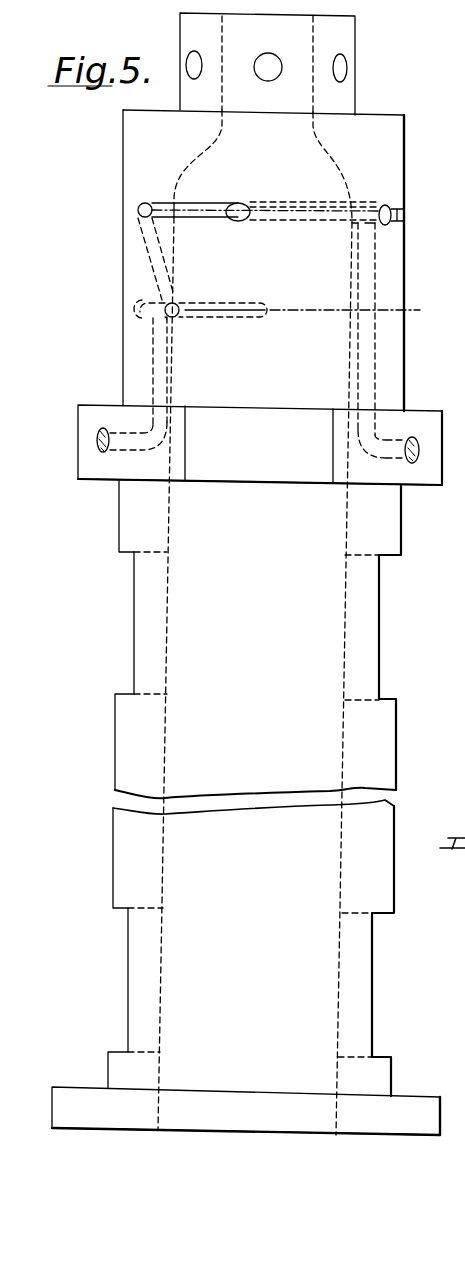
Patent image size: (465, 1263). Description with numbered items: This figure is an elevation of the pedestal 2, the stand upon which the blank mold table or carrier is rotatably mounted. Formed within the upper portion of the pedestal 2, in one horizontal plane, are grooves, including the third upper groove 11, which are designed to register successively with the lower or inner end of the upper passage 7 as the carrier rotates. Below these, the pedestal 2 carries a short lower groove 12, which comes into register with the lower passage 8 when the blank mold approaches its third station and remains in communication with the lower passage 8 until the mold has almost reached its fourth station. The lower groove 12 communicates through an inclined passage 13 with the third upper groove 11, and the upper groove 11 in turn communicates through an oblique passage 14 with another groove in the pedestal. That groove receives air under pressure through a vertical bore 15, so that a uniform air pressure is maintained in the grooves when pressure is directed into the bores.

The pedestal 2 is at (370, 893).
The upper passage 7 is at (140, 208).
The lower passage 8 is at (160, 308).
The third upper groove 11 is at (194, 208).
The short lower groove 12 is at (233, 316).
The inclined passage 13 is at (170, 256).
The oblique passage 14 is at (243, 207).
The vertical bore 15 is at (376, 368).